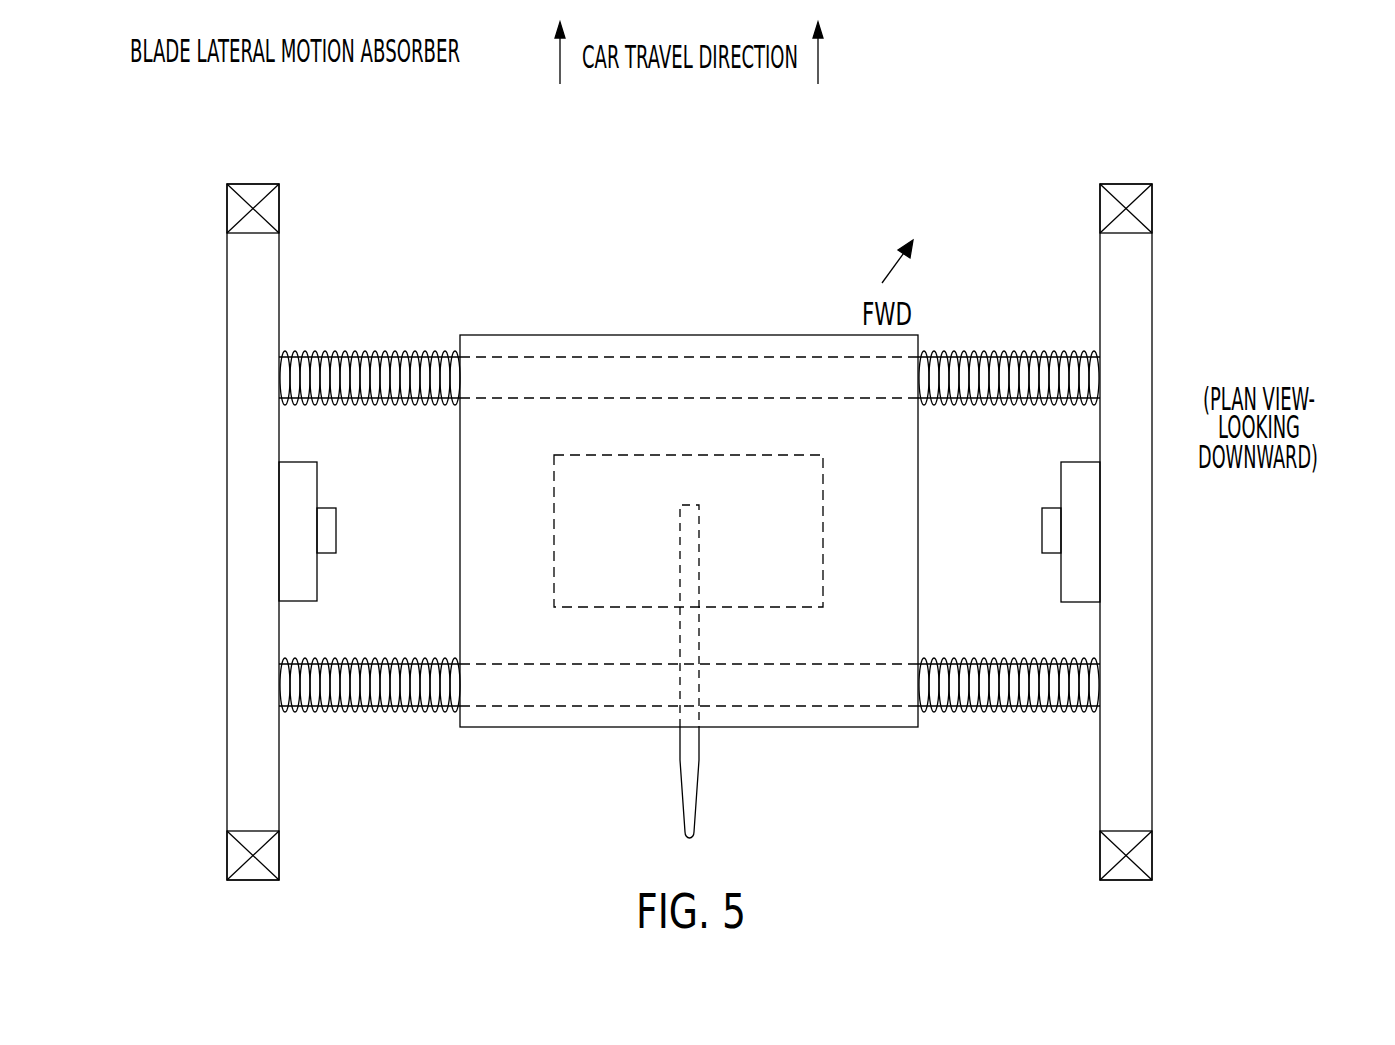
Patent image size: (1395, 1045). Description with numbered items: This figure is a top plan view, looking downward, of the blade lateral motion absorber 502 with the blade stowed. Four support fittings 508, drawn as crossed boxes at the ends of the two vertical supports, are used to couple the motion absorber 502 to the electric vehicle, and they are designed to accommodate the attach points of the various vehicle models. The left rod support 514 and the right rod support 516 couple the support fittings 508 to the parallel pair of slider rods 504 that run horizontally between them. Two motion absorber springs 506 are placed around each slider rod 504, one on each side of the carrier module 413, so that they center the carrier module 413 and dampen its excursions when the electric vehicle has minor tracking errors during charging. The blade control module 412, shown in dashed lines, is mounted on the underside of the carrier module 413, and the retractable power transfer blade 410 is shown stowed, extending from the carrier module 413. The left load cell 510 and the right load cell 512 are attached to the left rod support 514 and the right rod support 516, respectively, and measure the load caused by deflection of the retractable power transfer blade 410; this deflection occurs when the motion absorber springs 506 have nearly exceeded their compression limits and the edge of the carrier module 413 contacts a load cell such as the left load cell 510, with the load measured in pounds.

The blade lateral motion absorber 502 is at (330, 150).
The slider rod 504 is at (372, 378).
The motion absorber spring 506 is at (313, 356).
The support fitting 508 is at (270, 207).
The left load cell 510 is at (292, 524).
The right load cell 512 is at (1087, 530).
The left rod support 514 is at (227, 288).
The right rod support 516 is at (1152, 288).
The carrier module 413 is at (478, 531).
The blade control module 412 is at (607, 607).
The retractable power transfer blade 410 is at (697, 826).